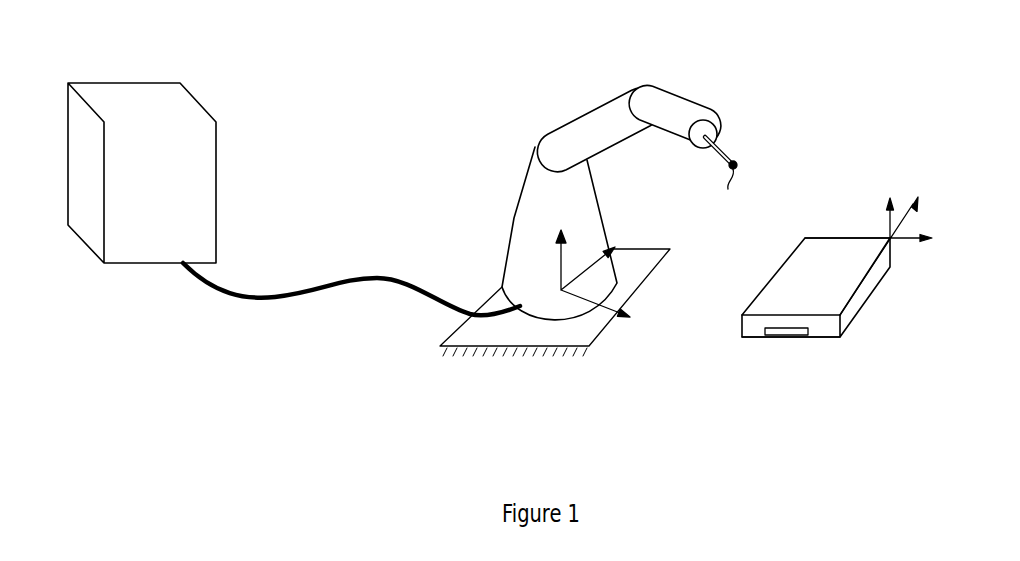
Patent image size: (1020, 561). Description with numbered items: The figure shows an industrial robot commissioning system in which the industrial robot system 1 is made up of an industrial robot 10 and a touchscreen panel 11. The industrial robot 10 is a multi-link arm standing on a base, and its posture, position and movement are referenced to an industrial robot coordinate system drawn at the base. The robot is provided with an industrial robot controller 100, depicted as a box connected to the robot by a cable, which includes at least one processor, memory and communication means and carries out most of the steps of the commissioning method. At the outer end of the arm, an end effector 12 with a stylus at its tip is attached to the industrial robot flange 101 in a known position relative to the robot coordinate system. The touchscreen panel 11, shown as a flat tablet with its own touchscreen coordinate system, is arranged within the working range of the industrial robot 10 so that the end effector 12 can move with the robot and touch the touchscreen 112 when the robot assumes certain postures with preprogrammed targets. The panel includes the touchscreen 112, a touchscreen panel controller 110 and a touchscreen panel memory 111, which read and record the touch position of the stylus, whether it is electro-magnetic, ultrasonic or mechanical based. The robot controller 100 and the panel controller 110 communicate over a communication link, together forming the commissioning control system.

The industrial robot system 1 is at (845, 328).
The industrial robot 10 is at (538, 188).
The industrial robot controller 100 is at (131, 97).
The industrial robot flange 101 is at (717, 132).
The end effector 12 is at (728, 153).
The touchscreen panel 11 is at (845, 303).
The touchscreen panel controller 110 is at (787, 336).
The touchscreen panel memory 111 is at (805, 327).
The touchscreen 112 is at (843, 282).